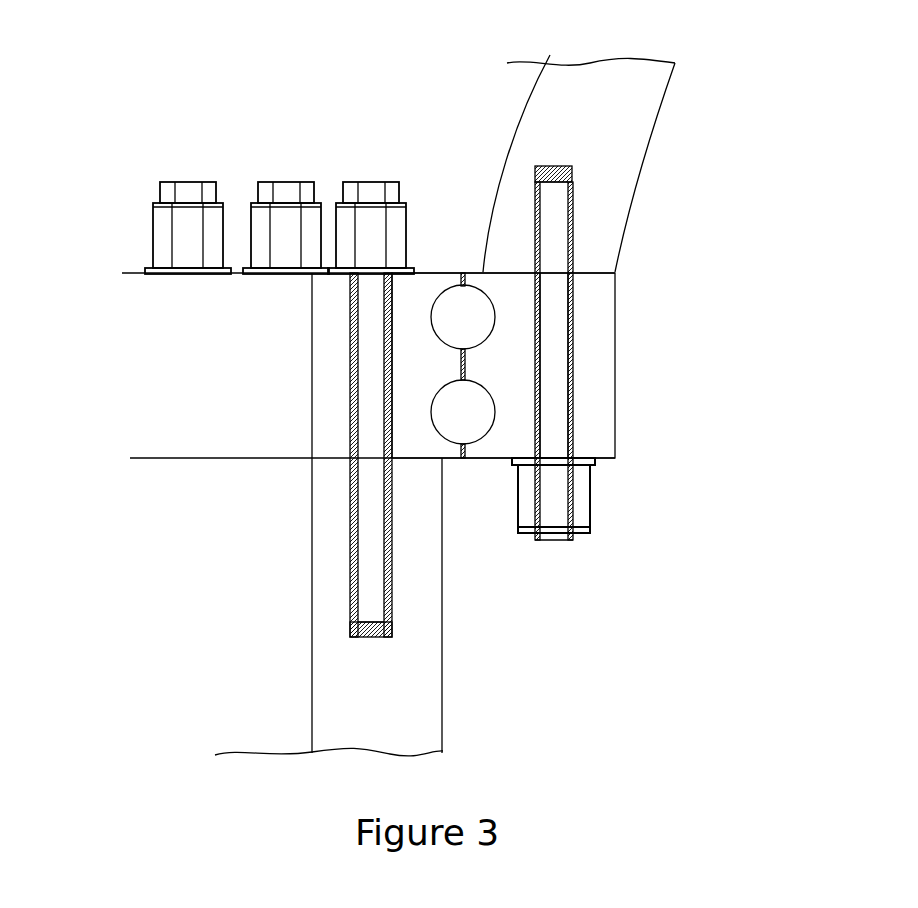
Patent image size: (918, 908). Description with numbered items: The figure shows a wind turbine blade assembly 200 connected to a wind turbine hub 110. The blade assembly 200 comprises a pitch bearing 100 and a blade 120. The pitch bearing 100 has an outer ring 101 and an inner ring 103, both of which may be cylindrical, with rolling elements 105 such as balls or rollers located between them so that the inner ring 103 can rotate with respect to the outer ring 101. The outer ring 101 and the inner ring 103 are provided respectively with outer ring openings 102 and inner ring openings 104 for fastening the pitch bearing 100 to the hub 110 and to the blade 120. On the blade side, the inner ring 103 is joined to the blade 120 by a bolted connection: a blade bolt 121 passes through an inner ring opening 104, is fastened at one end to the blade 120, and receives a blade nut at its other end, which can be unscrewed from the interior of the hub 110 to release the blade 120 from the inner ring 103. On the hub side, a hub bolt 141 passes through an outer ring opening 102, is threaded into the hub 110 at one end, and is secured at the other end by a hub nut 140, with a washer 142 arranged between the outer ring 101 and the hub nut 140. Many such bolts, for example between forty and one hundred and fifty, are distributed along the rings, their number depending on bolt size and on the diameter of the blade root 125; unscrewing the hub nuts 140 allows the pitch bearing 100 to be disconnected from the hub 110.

The pitch bearing 100 is at (660, 381).
The outer ring 101 is at (600, 288).
The outer ring openings 102 is at (568, 410).
The inner ring 103 is at (332, 397).
The inner ring openings 104 is at (350, 290).
The rolling elements 105 is at (457, 308).
The wind turbine hub 110 is at (598, 138).
The blade 120 is at (417, 690).
The blade bolt 121 is at (378, 527).
The blade root 125 is at (242, 646).
The hub nut 140 is at (587, 515).
The hub bolt 141 is at (552, 203).
The washer 142 is at (593, 465).
The wind turbine blade assembly 200 is at (624, 632).